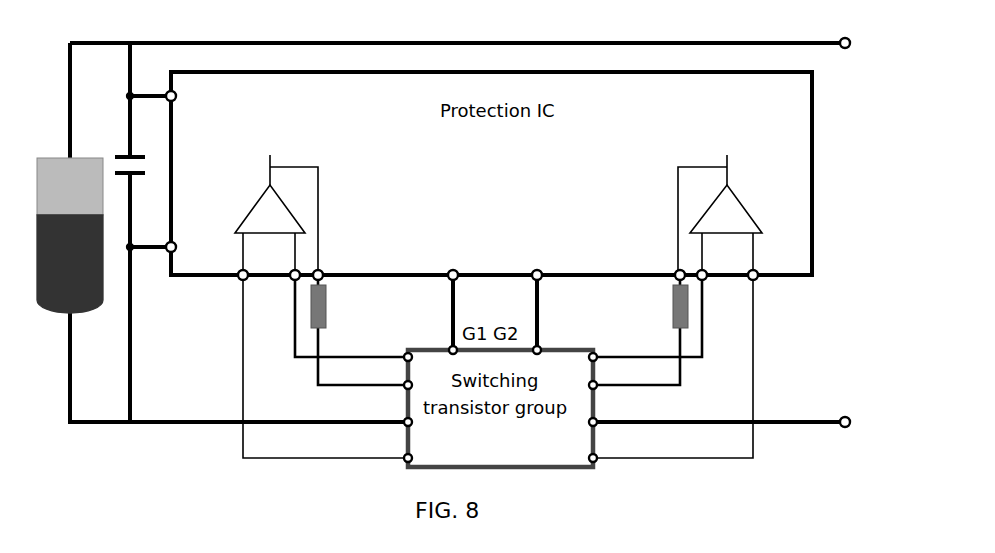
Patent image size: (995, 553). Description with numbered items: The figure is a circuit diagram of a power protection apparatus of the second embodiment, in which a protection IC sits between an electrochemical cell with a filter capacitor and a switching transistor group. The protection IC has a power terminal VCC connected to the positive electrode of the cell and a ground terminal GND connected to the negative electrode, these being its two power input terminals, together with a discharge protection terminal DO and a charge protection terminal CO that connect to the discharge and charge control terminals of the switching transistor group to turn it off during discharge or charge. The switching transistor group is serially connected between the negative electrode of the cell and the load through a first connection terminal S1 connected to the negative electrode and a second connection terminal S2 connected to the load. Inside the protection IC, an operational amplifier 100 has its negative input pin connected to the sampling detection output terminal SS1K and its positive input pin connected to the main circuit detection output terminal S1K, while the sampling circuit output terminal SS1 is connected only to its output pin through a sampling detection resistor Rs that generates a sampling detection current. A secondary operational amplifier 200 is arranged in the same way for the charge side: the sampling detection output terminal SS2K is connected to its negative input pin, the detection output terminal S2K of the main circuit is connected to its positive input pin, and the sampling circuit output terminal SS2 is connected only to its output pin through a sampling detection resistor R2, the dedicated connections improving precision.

The operational amplifier 100 is at (275, 218).
The secondary operational amplifier 200 is at (735, 212).
The sampling detection resistor Rs is at (334, 306).
The sampling detection resistor R2 is at (665, 306).
The power terminal VCC is at (174, 96).
The ground terminal GND is at (176, 247).
The discharge protection terminal DO is at (447, 293).
The charge protection terminal CO is at (533, 293).
The first connection terminal S1 is at (269, 409).
The second connection terminal S2 is at (719, 409).
The main circuit detection output terminal S1K is at (325, 366).
The detection output terminal of the main circuit S2K is at (673, 366).
The sampling circuit output terminal SS1 is at (363, 330).
The sampling circuit output terminal SS2 is at (636, 330).
The sampling detection output terminal SS1K is at (351, 316).
The sampling detection output terminal SS2K is at (647, 316).